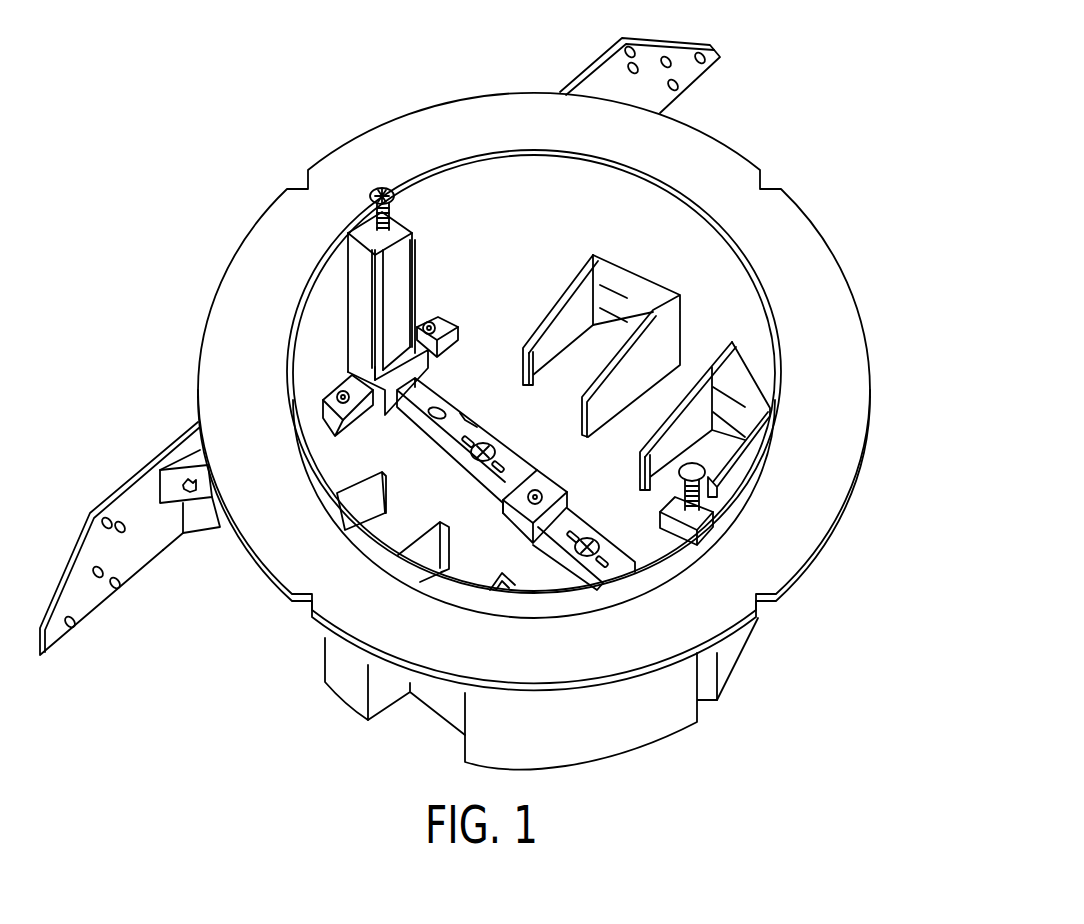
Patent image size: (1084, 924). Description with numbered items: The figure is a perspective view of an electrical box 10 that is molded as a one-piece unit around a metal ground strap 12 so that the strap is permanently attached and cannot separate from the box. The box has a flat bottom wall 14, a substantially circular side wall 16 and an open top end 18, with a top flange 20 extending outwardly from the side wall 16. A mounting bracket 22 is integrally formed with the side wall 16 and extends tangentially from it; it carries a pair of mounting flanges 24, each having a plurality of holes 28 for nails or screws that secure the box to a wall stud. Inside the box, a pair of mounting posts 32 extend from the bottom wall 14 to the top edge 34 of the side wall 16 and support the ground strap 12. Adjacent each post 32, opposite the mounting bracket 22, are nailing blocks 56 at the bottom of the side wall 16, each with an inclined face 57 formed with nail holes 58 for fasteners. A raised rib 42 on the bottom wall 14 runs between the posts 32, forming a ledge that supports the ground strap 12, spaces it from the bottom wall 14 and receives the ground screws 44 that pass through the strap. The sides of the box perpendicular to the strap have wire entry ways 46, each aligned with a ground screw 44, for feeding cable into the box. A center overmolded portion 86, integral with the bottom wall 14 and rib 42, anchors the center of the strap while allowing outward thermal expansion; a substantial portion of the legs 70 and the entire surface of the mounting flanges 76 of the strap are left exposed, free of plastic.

The electrical box 10 is at (727, 114).
The metal ground strap 12 is at (411, 247).
The bottom wall 14 is at (398, 510).
The side wall 16 is at (617, 720).
The open top end 18 is at (529, 186).
The top flange 20 is at (248, 308).
The mounting bracket 22 is at (134, 465).
The mounting flange 24 is at (135, 550).
The holes 28 is at (80, 620).
The mounting post 32 is at (353, 272).
The top edge 34 is at (430, 170).
The raised rib 42 is at (433, 453).
The ground screws 44 is at (485, 440).
The wire entry ways 46 is at (620, 312).
The nailing blocks 56 is at (338, 448).
The inclined face 57 is at (323, 405).
The nail holes 58 is at (333, 386).
The legs 70 is at (406, 280).
The mounting flange 76 is at (366, 217).
The center overmolded portion 86 is at (540, 477).